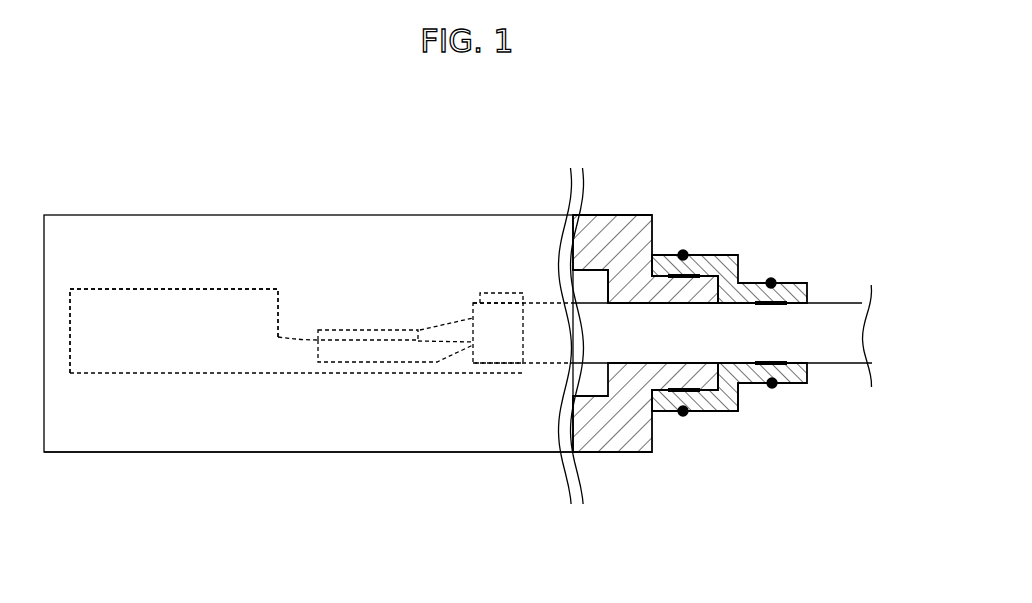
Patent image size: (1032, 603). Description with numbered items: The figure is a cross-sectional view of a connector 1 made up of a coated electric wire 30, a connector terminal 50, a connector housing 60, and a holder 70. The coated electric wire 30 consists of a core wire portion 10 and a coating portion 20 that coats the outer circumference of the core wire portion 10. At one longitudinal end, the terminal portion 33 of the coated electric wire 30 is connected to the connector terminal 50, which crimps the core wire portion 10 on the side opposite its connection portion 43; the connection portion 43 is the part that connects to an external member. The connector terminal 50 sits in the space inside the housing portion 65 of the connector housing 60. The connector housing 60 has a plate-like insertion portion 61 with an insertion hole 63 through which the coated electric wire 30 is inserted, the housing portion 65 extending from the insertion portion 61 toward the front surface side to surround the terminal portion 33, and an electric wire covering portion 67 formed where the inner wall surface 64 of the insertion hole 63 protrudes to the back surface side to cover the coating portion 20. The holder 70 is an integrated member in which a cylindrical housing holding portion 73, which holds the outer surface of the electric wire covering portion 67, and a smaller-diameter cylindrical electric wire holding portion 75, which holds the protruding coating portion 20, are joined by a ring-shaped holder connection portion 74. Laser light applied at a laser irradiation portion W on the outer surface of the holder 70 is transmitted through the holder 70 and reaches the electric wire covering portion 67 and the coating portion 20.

The connector 1 is at (188, 140).
The core wire portion 10 is at (378, 362).
The coating portion 20 is at (830, 315).
The coated electric wire 30 is at (846, 299).
The terminal portion 33 is at (318, 342).
The connection portion 43 is at (122, 289).
The connector terminal 50 is at (183, 289).
The connector housing 60 is at (300, 213).
The insertion portion 61 is at (606, 292).
The insertion hole 63 is at (640, 358).
The inner wall surface 64 is at (640, 312).
The housing portion 65 is at (155, 453).
The electric wire covering portion 67 is at (710, 412).
The holder 70 is at (800, 388).
The housing holding portion 73 is at (667, 413).
The holder connection portion 74 is at (742, 392).
The electric wire holding portion 75 is at (787, 385).
The laser irradiation portion W is at (683, 255).